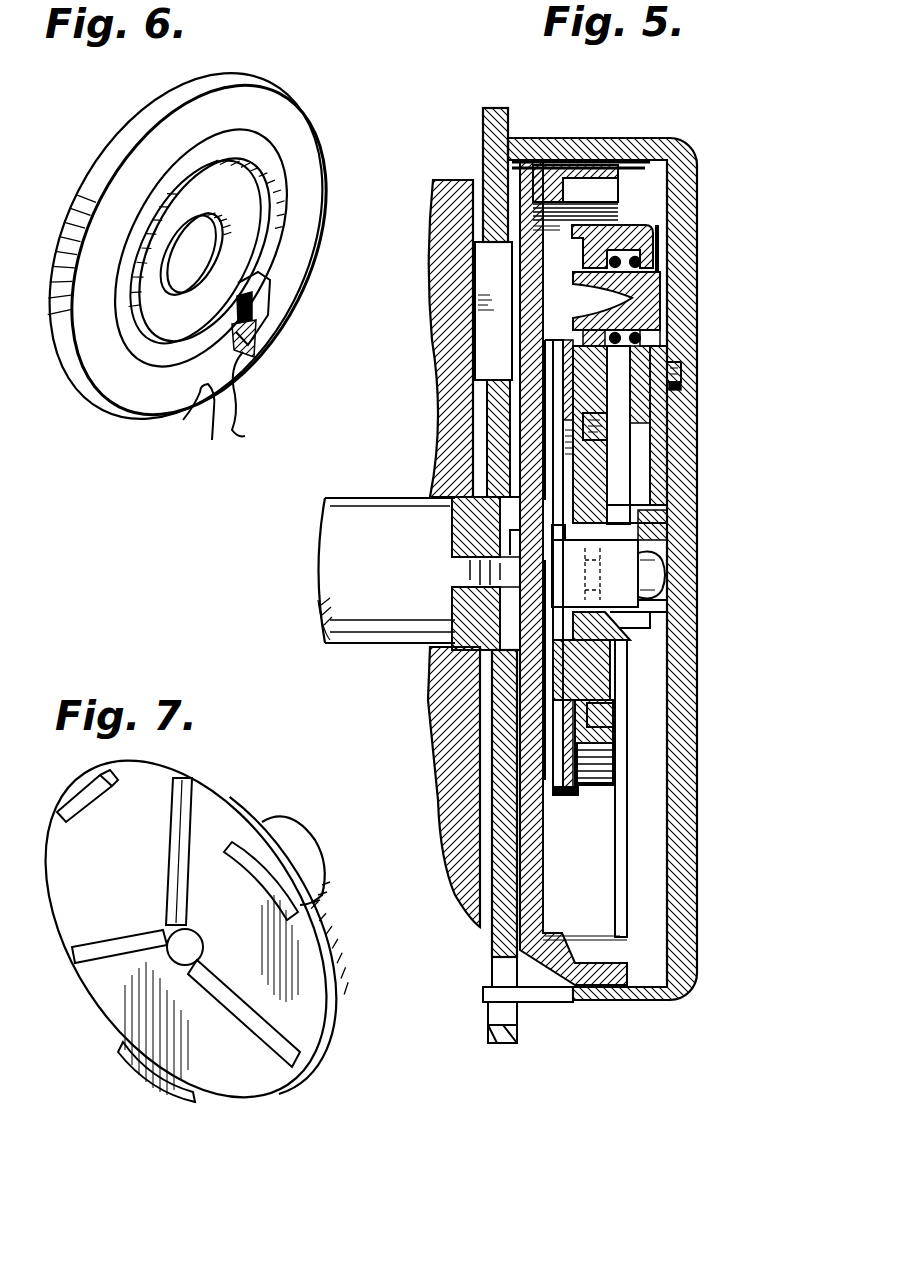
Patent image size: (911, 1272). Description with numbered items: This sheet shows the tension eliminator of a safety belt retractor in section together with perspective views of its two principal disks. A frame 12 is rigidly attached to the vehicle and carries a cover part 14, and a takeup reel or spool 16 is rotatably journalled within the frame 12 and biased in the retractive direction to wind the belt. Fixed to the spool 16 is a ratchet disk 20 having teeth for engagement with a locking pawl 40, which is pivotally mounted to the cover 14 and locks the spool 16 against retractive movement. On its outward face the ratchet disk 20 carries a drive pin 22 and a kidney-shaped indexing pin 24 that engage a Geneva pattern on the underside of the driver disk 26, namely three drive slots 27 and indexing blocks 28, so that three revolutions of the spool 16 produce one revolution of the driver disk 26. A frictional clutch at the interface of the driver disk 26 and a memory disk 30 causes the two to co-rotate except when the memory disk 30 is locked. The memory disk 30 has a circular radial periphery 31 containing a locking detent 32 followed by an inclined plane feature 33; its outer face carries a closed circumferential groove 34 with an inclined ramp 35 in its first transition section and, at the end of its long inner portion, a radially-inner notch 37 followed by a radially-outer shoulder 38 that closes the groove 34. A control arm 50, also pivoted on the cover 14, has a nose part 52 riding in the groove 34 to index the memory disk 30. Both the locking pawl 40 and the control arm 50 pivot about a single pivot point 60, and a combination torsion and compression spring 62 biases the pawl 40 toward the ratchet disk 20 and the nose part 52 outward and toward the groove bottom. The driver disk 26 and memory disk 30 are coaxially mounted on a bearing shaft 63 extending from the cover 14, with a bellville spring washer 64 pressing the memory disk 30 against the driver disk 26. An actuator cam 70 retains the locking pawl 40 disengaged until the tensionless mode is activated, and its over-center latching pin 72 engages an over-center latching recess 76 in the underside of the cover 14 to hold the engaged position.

In FIG. 5, the frame 12 is at (492, 128).
In FIG. 5, the cover part 14 is at (566, 152).
In FIG. 5, the takeup reel or spool 16 is at (330, 570).
In FIG. 7, the takeup reel or spool 16 is at (296, 860).
In FIG. 5, the ratchet disk 20 is at (600, 190).
In FIG. 5, the drive pin 22 is at (560, 495).
In FIG. 5, the indexing pin 24 is at (545, 665).
In FIG. 5, the driver disk 26 is at (572, 800).
In FIG. 7, the driver disk 26 is at (330, 1012).
In FIG. 5, the drive slots 27 is at (558, 352).
In FIG. 7, the drive slots 27 is at (185, 792).
In FIG. 5, the indexing blocks 28 is at (545, 412).
In FIG. 7, the indexing blocks 28 is at (75, 800).
In FIG. 5, the memory disk 30 is at (615, 770).
In FIG. 6, the memory disk 30 is at (285, 120).
In FIG. 5, the circular radial periphery 31 is at (613, 800).
In FIG. 6, the circular radial periphery 31 is at (120, 152).
In FIG. 6, the locking detent 32 is at (212, 402).
In FIG. 6, the inclined plane feature 33 is at (250, 400).
In FIG. 5, the circumferential groove 34 is at (615, 715).
In FIG. 6, the circumferential groove 34 is at (285, 192).
In FIG. 6, the inclined ramp 35 is at (252, 318).
In FIG. 6, the radially-inner notch 37 is at (240, 318).
In FIG. 6, the radially-outer shoulder 38 is at (255, 345).
In FIG. 5, the locking pawl 40 is at (655, 222).
In FIG. 5, the control arm 50 is at (630, 357).
In FIG. 5, the nose part 52 is at (625, 425).
In FIG. 5, the pivot point 60 is at (655, 290).
In FIG. 5, the combination torsion and compression spring 62 is at (640, 262).
In FIG. 5, the bearing shaft 63 is at (667, 581).
In FIG. 5, the bellville spring washer 64 is at (636, 650).
In FIG. 5, the actuator cam 70 is at (655, 462).
In FIG. 5, the over-center latching pin 72 is at (681, 370).
In FIG. 5, the over-center latching recess 76 is at (690, 385).